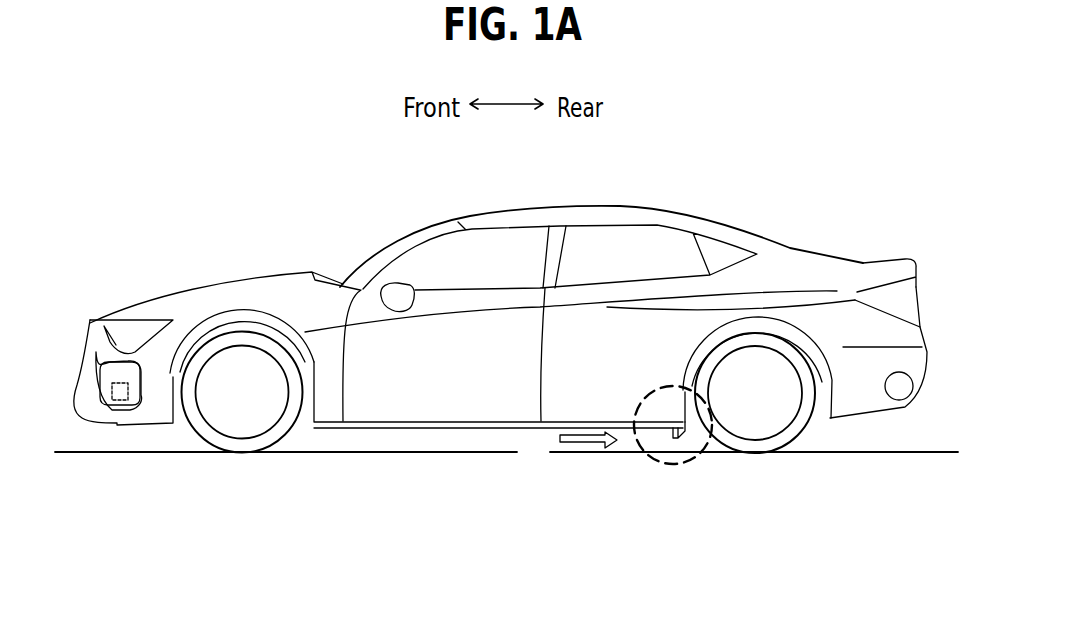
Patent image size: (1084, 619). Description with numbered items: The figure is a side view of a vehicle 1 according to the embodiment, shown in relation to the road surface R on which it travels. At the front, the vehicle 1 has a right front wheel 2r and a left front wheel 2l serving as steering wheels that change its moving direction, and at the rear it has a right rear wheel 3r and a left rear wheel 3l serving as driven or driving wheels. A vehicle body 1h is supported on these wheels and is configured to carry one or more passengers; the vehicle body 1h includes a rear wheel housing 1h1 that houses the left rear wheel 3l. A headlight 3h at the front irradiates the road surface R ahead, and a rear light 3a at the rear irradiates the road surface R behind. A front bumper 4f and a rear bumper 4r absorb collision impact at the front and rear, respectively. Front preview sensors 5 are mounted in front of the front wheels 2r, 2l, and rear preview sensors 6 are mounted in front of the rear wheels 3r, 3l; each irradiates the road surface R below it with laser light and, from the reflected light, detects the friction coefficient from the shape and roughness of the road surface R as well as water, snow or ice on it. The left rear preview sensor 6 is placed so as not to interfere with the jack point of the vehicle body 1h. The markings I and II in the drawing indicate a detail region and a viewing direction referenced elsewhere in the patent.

The vehicle 1 is at (501, 314).
The vehicle body 1h is at (790, 247).
The rear wheel housing 1h1 is at (700, 414).
The left front wheel 2l is at (237, 417).
The right front wheel 2r is at (267, 413).
The left rear wheel 3l is at (767, 412).
The right rear wheel 3r is at (793, 402).
The rear light 3a is at (905, 312).
The headlight 3h is at (137, 333).
The front bumper 4f is at (77, 370).
The rear bumper 4r is at (927, 360).
The front preview sensor 5 is at (100, 418).
The rear preview sensor 6 is at (665, 456).
The section I indicator I is at (647, 400).
The section II indicator II is at (572, 448).
The road surface R is at (913, 492).